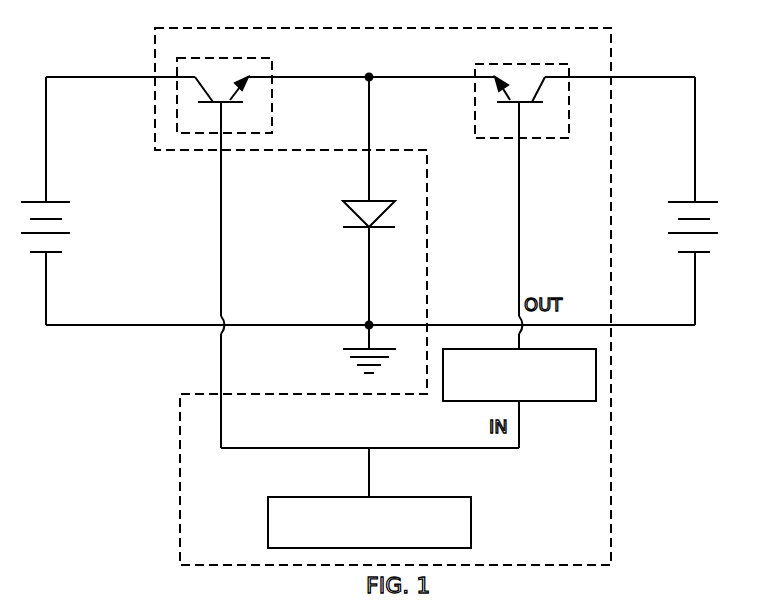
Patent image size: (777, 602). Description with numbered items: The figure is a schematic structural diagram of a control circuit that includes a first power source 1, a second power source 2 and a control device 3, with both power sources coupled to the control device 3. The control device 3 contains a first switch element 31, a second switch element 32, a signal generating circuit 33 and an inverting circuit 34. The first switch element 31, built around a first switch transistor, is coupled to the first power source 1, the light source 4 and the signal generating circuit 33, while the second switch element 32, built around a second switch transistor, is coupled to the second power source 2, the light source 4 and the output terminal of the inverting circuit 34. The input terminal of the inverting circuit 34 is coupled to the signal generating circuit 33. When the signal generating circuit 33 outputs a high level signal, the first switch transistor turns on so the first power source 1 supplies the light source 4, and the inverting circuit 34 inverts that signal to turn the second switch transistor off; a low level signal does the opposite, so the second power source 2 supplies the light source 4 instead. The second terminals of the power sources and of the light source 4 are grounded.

The first power source 1 is at (68, 202).
The second power source 2 is at (708, 202).
The control device 3 is at (180, 443).
The light source 4 is at (377, 201).
The first switch element 31 is at (272, 68).
The second switch element 32 is at (550, 138).
The signal generating circuit 33 is at (268, 530).
The inverting circuit 34 is at (569, 401).